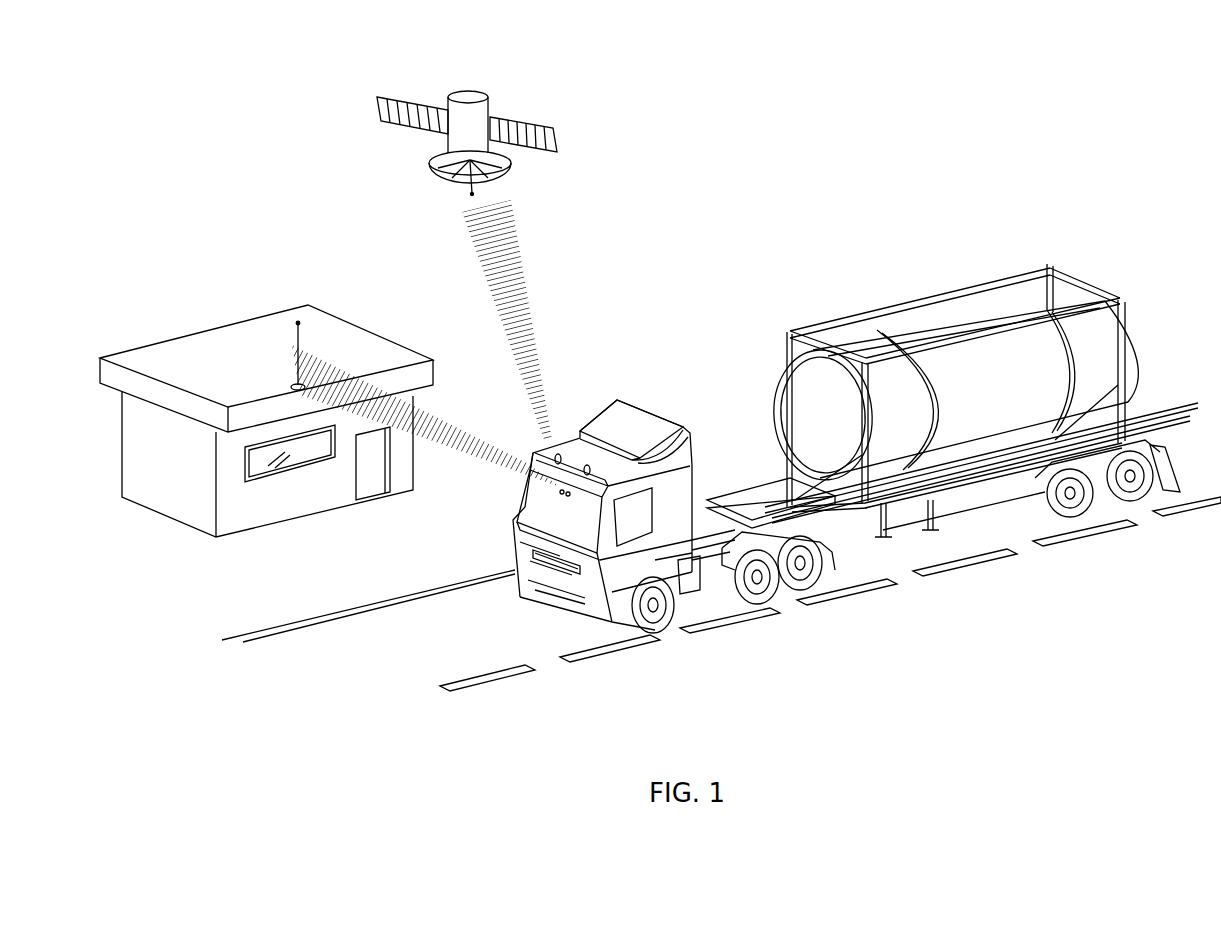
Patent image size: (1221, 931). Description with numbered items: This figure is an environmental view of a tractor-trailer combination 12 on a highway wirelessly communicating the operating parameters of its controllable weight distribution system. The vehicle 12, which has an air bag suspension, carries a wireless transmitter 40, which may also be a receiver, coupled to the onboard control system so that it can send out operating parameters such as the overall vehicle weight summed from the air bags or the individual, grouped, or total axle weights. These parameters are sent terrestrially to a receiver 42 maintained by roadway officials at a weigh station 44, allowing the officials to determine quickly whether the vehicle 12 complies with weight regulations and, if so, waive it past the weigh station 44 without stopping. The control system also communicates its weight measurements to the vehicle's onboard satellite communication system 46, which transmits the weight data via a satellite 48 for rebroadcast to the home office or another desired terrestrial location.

The tractor-trailer combination 12 is at (848, 330).
The wireless transmitter 40 is at (545, 453).
The receiver 42 is at (310, 385).
The weigh station 44 is at (187, 513).
The onboard satellite communication system 46 is at (562, 496).
The satellite 48 is at (516, 161).